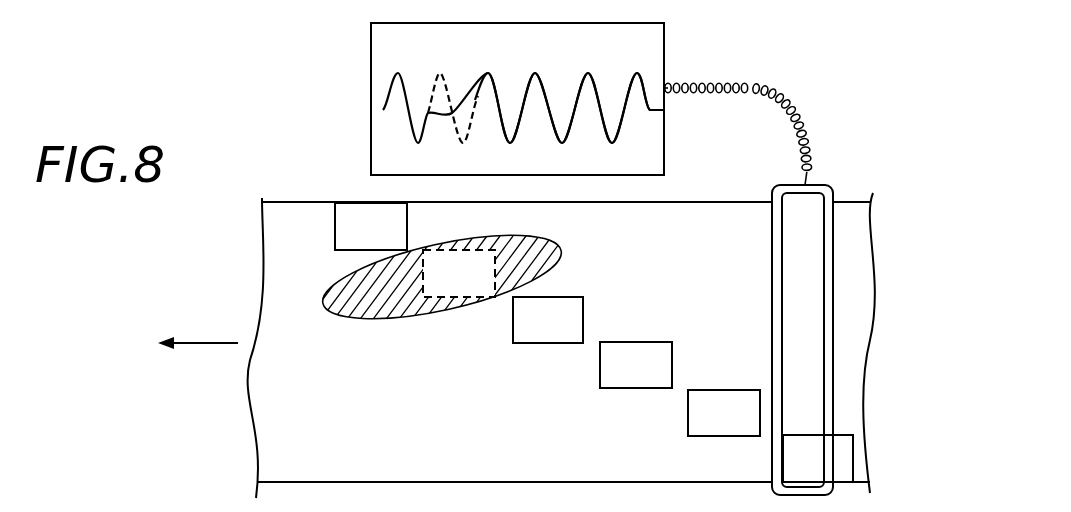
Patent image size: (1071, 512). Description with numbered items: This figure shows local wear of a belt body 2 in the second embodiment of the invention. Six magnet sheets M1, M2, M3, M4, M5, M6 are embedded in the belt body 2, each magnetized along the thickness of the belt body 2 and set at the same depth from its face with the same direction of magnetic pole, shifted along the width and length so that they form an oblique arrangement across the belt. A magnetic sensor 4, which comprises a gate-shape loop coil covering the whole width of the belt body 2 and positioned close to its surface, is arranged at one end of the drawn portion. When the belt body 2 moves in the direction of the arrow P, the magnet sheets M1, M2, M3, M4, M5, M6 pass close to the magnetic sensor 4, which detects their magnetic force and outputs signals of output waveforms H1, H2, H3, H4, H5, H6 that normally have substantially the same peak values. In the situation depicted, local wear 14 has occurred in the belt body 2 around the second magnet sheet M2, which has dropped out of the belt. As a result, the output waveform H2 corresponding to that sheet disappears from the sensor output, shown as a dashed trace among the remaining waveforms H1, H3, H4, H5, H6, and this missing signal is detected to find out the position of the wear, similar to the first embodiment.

The belt body 2 is at (313, 198).
The magnetic sensor 4 is at (828, 190).
The local wear 14 is at (347, 312).
The magnet sheet M1 is at (335, 228).
The second magnet sheet M2 is at (437, 298).
The magnet sheet M3 is at (543, 343).
The magnet sheet M4 is at (632, 388).
The magnet sheet M5 is at (721, 436).
The magnet sheet M6 is at (853, 463).
The arrow P is at (211, 345).
The output waveform H1 is at (517, 99).
The output waveform H2 is at (451, 92).
The output waveform H3 is at (490, 92).
The output waveform H4 is at (536, 92).
The output waveform H5 is at (587, 92).
The output waveform H6 is at (632, 92).